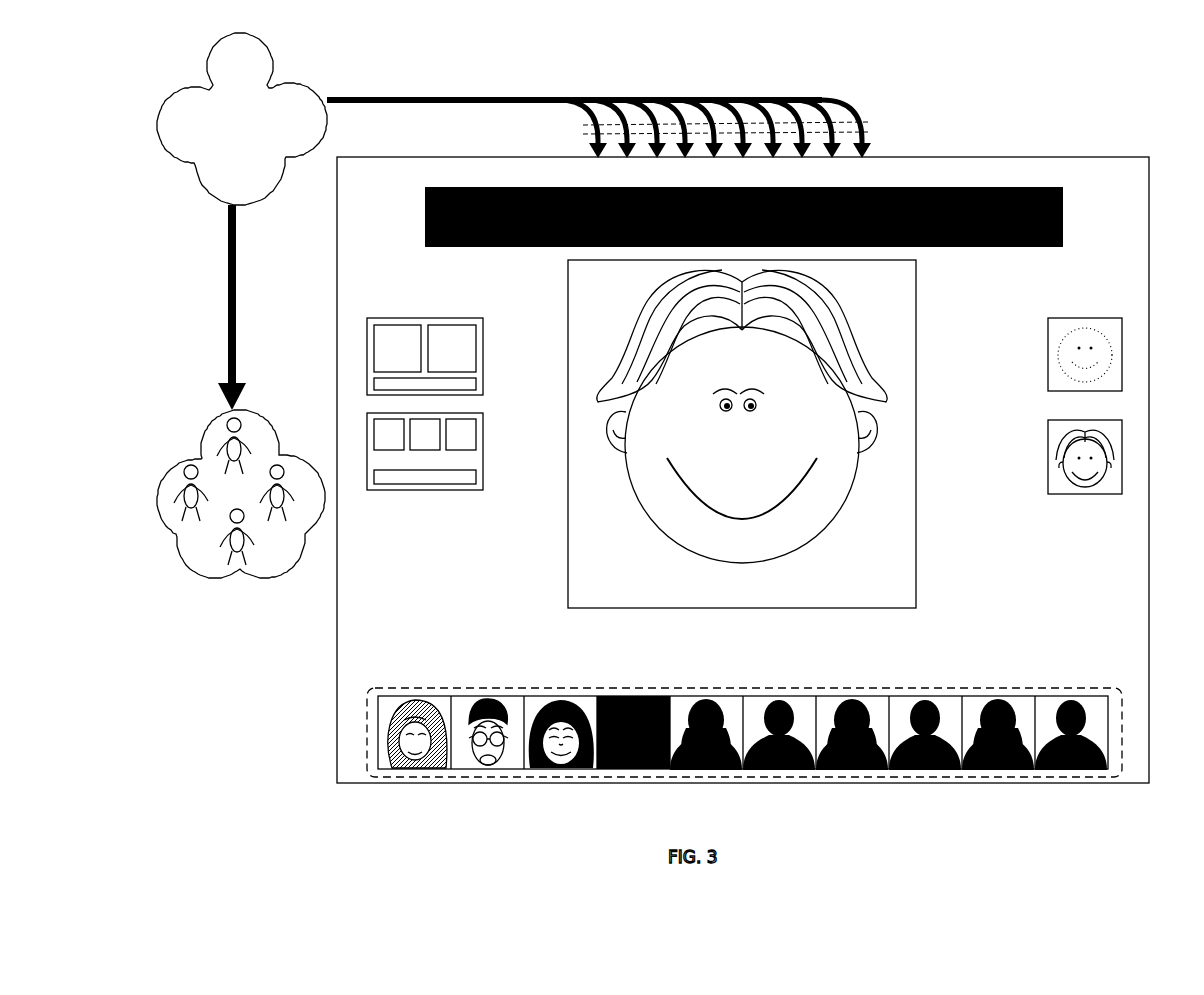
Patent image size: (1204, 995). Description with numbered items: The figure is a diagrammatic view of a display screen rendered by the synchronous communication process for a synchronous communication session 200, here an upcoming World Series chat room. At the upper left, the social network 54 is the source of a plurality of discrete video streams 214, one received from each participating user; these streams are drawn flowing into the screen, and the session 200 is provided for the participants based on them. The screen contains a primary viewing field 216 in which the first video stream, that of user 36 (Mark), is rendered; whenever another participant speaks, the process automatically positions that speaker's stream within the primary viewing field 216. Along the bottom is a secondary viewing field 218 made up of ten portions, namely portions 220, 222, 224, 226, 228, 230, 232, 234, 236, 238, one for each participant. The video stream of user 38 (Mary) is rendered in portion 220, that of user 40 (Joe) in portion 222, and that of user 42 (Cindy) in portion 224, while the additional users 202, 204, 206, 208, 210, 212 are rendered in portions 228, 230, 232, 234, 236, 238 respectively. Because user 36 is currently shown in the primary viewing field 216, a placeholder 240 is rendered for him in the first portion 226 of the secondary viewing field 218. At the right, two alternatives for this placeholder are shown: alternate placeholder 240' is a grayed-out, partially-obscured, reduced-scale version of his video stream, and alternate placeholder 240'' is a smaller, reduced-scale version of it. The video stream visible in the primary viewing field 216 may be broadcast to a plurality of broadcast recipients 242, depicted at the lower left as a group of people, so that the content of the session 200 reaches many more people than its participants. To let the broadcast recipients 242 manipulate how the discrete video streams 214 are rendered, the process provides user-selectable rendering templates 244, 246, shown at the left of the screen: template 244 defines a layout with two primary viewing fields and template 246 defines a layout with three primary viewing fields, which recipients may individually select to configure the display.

The social network 54 is at (242, 119).
The discrete video streams 214 is at (870, 127).
The broadcast recipients 242 is at (229, 578).
The template 244 is at (398, 318).
The template 246 is at (398, 490).
The primary viewing field 216 is at (700, 434).
The user 36 is at (742, 430).
The synchronous communication session 200 is at (744, 217).
The alternate placeholder 240' is at (1079, 333).
The alternate placeholder 240'' is at (1079, 478).
The secondary viewing field 218 is at (367, 735).
The portion 220 is at (418, 697).
The portion 222 is at (490, 697).
The portion 224 is at (561, 697).
The portion 226 is at (633, 697).
The portion 228 is at (705, 697).
The portion 230 is at (776, 697).
The portion 232 is at (848, 697).
The portion 234 is at (920, 697).
The portion 236 is at (991, 697).
The portion 238 is at (1063, 697).
The user 38 is at (423, 770).
The user 40 is at (493, 770).
The user 42 is at (564, 770).
The placeholder 240 is at (656, 793).
The user 202 is at (706, 770).
The user 204 is at (776, 770).
The user 206 is at (848, 770).
The user 208 is at (921, 770).
The user 210 is at (991, 770).
The user 212 is at (1061, 770).